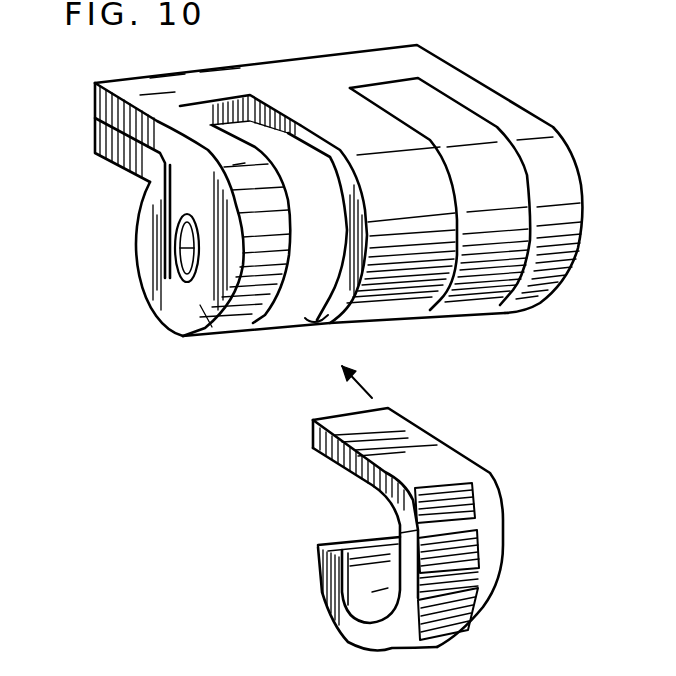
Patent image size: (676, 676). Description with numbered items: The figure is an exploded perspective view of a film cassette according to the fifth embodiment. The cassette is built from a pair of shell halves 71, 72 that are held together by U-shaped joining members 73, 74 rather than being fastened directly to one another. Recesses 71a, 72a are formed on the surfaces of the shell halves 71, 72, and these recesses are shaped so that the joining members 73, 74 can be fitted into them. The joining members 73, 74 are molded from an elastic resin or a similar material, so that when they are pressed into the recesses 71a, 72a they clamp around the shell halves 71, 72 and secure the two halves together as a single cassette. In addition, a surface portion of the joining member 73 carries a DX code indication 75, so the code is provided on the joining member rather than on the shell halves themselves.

The shell half 71 is at (223, 323).
The recess 71a is at (290, 112).
The shell half 72 is at (160, 292).
The recess 72a is at (323, 318).
The joining member 73 is at (450, 465).
The joining member 74 is at (473, 297).
The DX code indication 75 is at (455, 607).